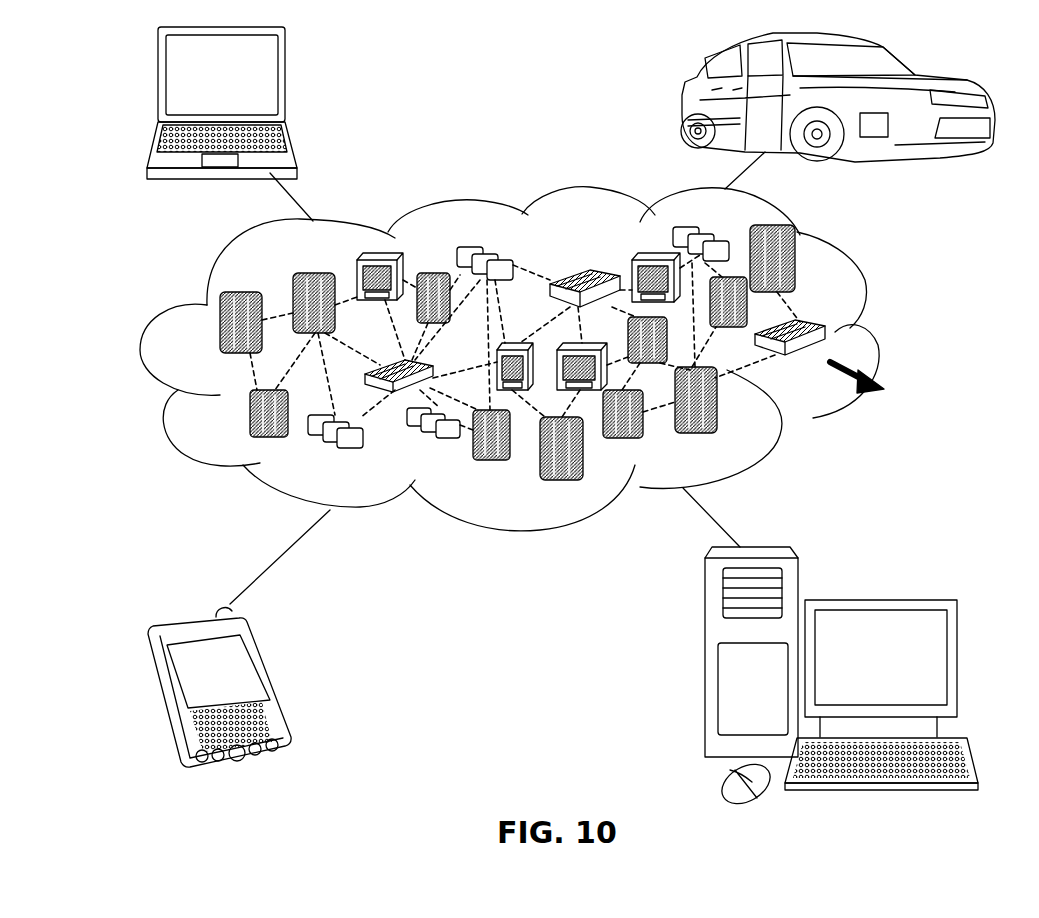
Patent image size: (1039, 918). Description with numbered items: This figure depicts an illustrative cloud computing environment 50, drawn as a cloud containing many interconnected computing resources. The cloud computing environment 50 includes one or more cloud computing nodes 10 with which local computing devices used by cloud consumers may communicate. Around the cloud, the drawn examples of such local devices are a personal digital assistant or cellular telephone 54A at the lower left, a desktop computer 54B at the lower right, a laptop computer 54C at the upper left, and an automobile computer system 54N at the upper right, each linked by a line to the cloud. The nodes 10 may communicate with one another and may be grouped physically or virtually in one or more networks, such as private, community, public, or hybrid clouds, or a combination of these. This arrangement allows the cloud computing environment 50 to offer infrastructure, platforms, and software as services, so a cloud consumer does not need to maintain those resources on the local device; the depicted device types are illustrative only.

The laptop computer 54C is at (285, 82).
The automobile computer system 54N is at (685, 100).
The cloud computing environment 50 is at (880, 333).
The cloud computing node 10 is at (884, 389).
The personal digital assistant or cellular telephone 54A is at (272, 682).
The desktop computer 54B is at (878, 600).